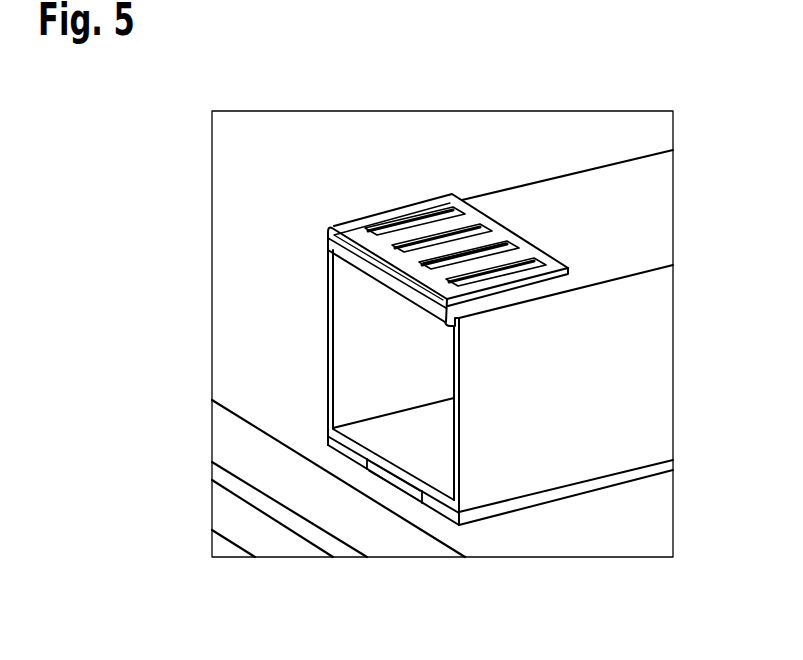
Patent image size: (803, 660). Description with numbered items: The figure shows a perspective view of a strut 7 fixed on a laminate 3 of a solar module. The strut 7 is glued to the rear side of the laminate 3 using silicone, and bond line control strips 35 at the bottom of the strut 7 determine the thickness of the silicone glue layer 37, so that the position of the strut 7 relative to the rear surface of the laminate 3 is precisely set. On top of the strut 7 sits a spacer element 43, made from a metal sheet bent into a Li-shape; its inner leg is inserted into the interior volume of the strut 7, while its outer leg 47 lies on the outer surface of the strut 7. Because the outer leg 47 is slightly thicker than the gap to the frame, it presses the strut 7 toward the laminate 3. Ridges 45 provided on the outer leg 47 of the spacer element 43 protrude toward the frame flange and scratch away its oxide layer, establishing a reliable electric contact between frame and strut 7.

The laminate 3 is at (232, 447).
The strut 7 is at (606, 381).
The bond line control strips 35 is at (345, 449).
The silicone glue layer 37 is at (392, 478).
The spacer element 43 is at (407, 232).
The ridges 45 is at (440, 248).
The outer leg 47 is at (346, 221).